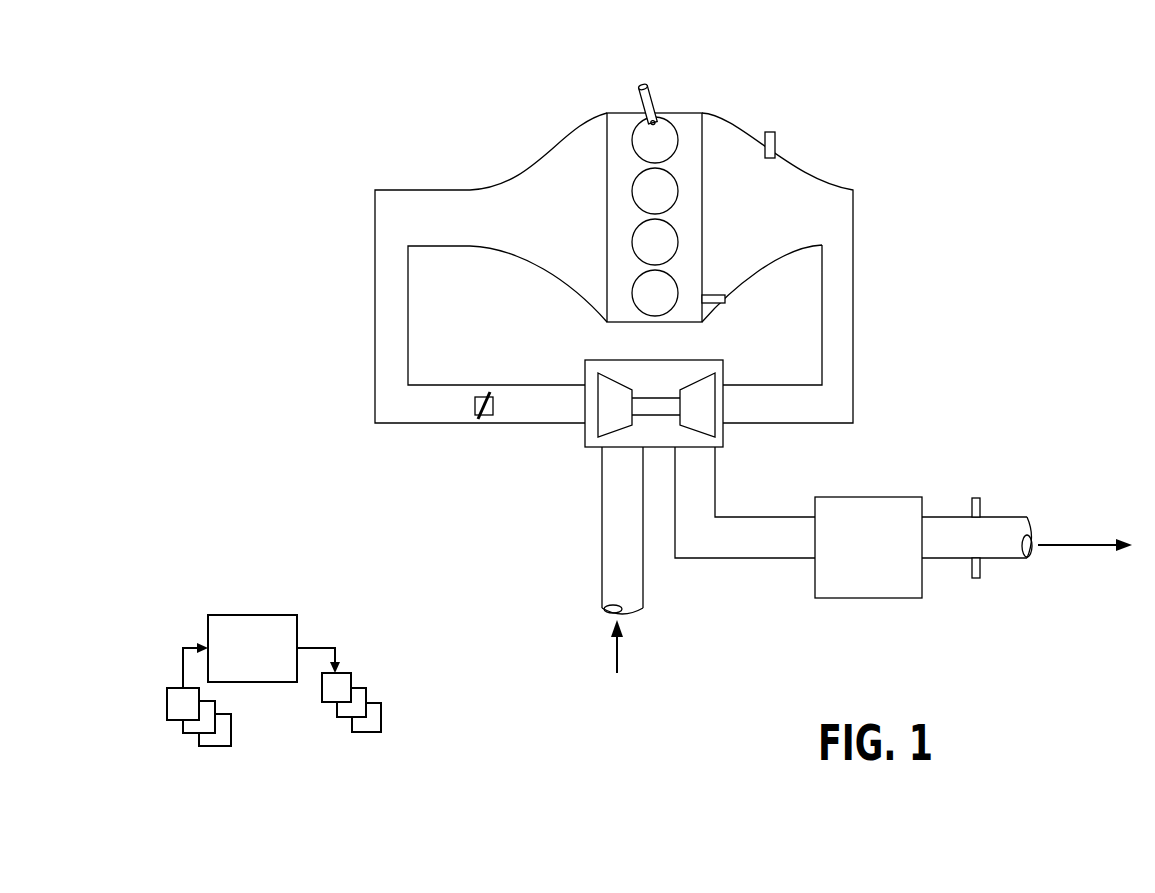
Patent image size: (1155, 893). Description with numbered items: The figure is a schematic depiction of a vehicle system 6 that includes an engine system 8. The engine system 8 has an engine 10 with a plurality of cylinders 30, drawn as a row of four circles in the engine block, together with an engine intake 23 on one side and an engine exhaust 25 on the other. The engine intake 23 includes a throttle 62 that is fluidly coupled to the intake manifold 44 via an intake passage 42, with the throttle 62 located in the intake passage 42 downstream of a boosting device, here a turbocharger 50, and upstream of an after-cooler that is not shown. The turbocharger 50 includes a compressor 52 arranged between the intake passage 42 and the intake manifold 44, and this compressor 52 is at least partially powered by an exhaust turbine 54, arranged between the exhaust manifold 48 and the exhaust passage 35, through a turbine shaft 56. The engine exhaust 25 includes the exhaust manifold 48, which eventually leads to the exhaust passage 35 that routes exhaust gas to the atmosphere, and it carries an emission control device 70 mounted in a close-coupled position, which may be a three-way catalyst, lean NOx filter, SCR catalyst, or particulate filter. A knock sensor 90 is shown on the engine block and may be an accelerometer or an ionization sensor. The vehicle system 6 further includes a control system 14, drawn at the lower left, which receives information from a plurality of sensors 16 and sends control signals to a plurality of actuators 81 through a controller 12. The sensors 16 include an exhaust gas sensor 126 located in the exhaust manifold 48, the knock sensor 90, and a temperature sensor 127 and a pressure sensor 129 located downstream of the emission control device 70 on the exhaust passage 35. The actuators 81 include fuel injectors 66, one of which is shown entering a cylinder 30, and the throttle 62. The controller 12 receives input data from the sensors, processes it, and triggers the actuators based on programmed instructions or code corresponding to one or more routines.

The vehicle system 6 is at (127, 132).
The engine system 8 is at (867, 117).
The engine 10 is at (703, 200).
The controller 12 is at (252, 648).
The control system 14 is at (157, 600).
The sensors 16 is at (157, 755).
The engine intake 23 is at (531, 520).
The engine exhaust 25 is at (879, 321).
The cylinders 30 is at (677, 132).
The exhaust passage 35 is at (992, 517).
The intake passage 42 is at (602, 558).
The intake manifold 44 is at (491, 268).
The exhaust manifold 48 is at (777, 268).
The turbocharger 50 is at (650, 359).
The compressor 52 is at (598, 385).
The exhaust turbine 54 is at (717, 393).
The turbine shaft 56 is at (638, 397).
The throttle 62 is at (494, 407).
The fuel injectors 66 is at (646, 84).
The emission control device 70 is at (852, 497).
The actuators 81 is at (310, 735).
The knock sensor 90 is at (726, 299).
The exhaust gas sensor 126 is at (776, 148).
The temperature sensor 127 is at (981, 566).
The pressure sensor 129 is at (975, 497).